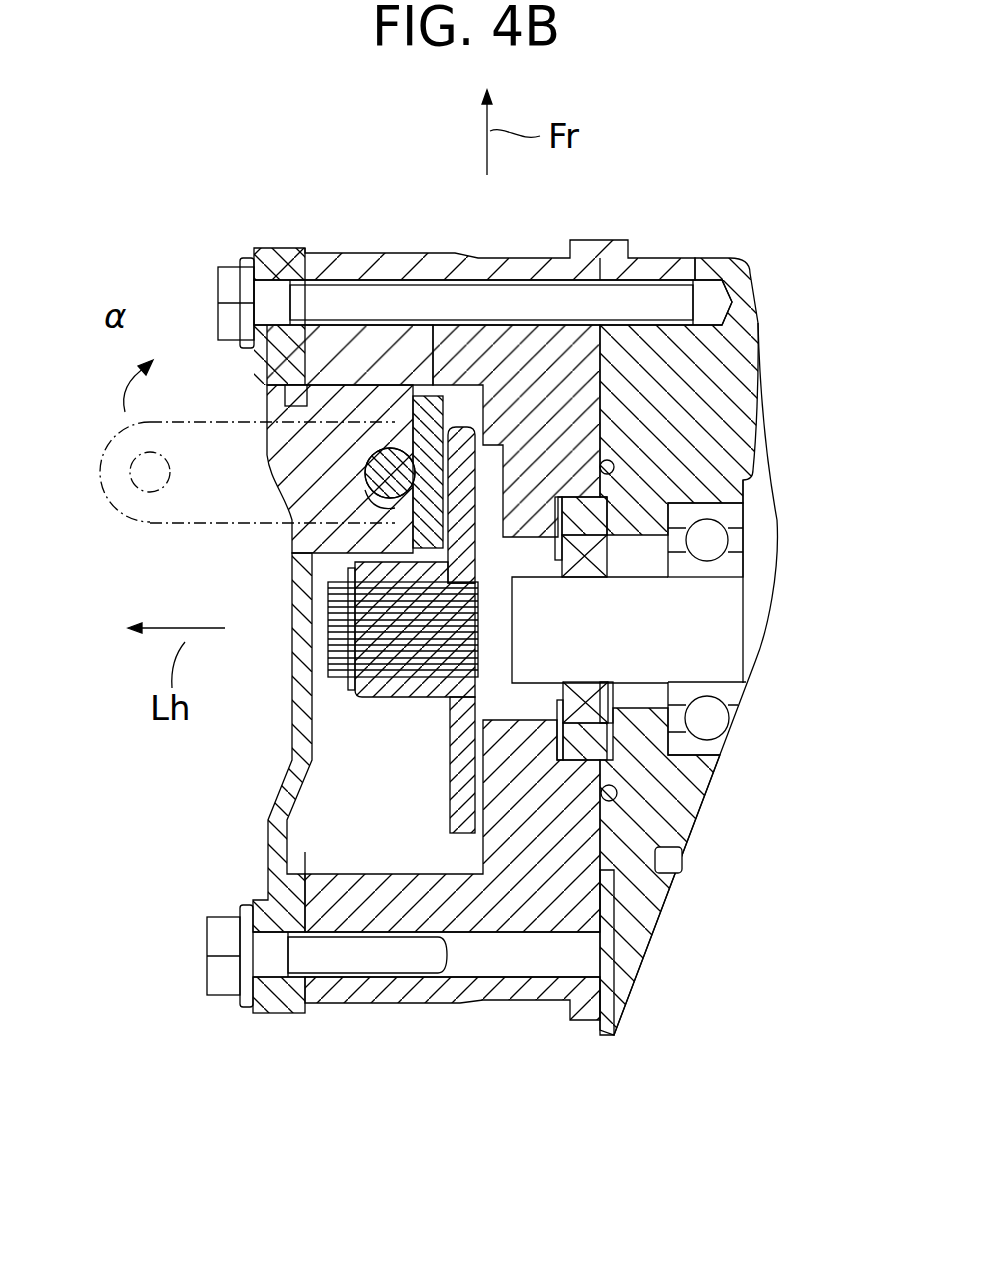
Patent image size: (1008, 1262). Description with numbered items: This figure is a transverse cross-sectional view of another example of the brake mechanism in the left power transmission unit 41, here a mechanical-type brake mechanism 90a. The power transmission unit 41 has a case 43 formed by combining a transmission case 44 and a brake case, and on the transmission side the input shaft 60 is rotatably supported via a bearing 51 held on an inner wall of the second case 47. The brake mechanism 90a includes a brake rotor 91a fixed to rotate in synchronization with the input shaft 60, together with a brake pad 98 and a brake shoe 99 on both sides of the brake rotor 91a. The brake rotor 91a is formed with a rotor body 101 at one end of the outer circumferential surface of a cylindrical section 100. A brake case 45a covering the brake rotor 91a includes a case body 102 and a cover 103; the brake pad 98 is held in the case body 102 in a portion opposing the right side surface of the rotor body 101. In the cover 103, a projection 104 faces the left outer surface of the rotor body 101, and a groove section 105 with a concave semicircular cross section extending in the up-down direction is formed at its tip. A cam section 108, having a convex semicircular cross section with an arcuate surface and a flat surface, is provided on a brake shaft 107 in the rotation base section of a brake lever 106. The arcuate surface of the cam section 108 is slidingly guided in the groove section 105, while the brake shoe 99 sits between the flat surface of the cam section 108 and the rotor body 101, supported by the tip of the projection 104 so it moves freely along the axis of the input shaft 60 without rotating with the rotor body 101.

The power transmission unit 41 is at (662, 1010).
The case 43 is at (665, 262).
The transmission case 44 is at (723, 347).
The brake case 45a is at (520, 1012).
The second case 47 is at (722, 262).
The bearing 51 is at (715, 541).
The input shaft 60 is at (702, 626).
The brake mechanism 90a is at (455, 770).
The brake rotor 91a is at (428, 806).
The brake pad 98 is at (497, 440).
The brake shoe 99 is at (430, 395).
The cylindrical section 100 is at (400, 698).
The rotor body 101 is at (398, 492).
The case body 102 is at (355, 1005).
The cover 103 is at (280, 1015).
The projection 104 is at (360, 445).
The groove section 105 is at (398, 503).
The brake lever 106 is at (212, 525).
The brake shaft 107 is at (273, 460).
The cam section 108 is at (468, 485).